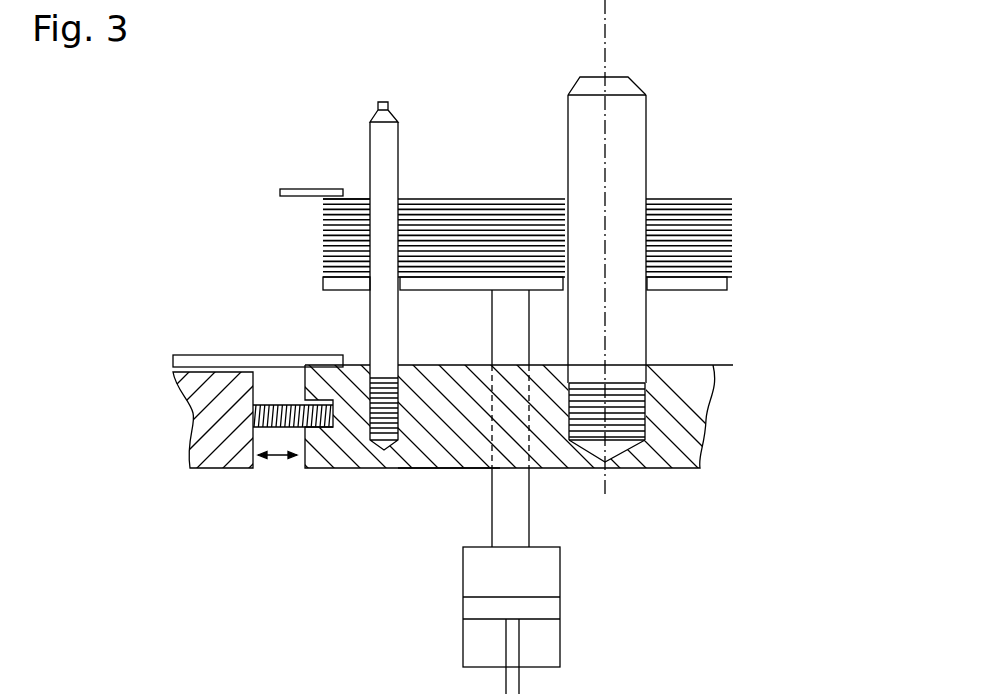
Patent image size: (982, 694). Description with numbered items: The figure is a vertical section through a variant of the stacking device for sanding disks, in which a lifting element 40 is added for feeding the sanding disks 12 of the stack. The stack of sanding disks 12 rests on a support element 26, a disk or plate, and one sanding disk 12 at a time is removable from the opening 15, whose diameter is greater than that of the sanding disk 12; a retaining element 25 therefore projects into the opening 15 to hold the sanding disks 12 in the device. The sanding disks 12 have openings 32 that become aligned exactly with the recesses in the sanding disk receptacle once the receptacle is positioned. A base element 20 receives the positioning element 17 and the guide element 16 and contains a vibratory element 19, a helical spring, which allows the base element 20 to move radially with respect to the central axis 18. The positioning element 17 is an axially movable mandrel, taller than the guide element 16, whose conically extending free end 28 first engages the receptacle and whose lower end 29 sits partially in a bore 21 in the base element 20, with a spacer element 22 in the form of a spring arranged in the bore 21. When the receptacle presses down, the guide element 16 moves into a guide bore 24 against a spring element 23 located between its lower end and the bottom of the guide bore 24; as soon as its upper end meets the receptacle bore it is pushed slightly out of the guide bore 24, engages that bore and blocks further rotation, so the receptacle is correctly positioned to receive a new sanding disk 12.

The sanding disk 12 is at (493, 193).
The opening 15 is at (450, 162).
The guide element 16 is at (377, 152).
The positioning element 17 is at (618, 162).
The central axis 18 is at (605, 42).
The vibratory element 19 is at (253, 408).
The base element 20 is at (343, 450).
The bore 21 is at (647, 413).
The spacer element 22 is at (627, 420).
The spring element 23 is at (387, 440).
The guide bore 24 is at (433, 462).
The retaining element 25 is at (280, 192).
The support element 26 is at (333, 284).
The free end 28 is at (618, 83).
The lower end 29 is at (647, 383).
The openings 32 is at (365, 198).
The lifting element 40 is at (492, 583).